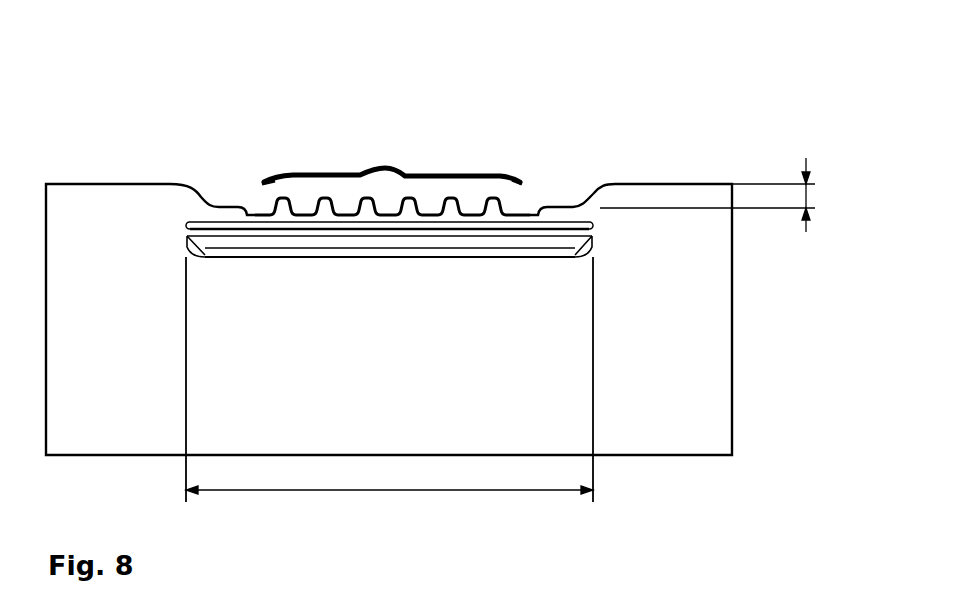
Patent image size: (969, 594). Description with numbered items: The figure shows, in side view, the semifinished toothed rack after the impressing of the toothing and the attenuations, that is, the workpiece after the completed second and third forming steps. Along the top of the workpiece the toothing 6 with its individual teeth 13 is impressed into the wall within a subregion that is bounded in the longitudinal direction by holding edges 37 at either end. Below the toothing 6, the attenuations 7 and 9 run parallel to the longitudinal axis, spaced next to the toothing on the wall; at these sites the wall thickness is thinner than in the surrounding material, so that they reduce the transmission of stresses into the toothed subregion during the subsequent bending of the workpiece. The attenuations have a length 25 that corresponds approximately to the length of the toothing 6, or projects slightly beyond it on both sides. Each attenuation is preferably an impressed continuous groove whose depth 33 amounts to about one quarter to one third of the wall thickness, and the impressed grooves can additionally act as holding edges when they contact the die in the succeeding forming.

The holding edges 37 is at (246, 206).
The teeth 13 is at (493, 198).
The toothing 6 is at (394, 172).
The attenuation 7 is at (482, 227).
The attenuation 9 is at (445, 245).
The length 25 is at (389, 504).
The depth 33 is at (724, 195).